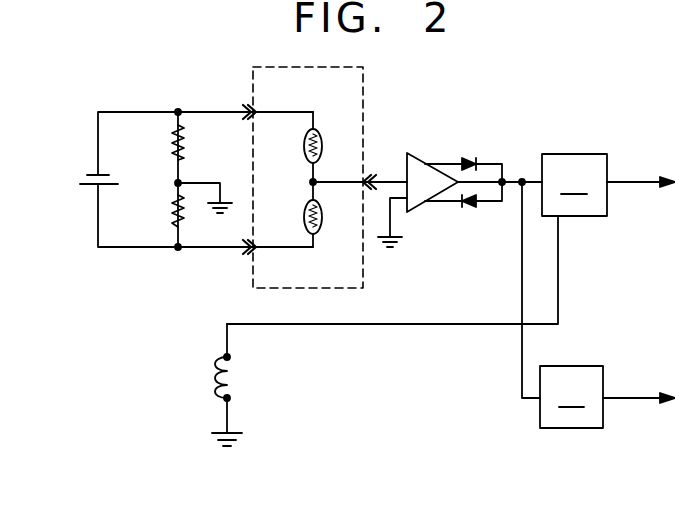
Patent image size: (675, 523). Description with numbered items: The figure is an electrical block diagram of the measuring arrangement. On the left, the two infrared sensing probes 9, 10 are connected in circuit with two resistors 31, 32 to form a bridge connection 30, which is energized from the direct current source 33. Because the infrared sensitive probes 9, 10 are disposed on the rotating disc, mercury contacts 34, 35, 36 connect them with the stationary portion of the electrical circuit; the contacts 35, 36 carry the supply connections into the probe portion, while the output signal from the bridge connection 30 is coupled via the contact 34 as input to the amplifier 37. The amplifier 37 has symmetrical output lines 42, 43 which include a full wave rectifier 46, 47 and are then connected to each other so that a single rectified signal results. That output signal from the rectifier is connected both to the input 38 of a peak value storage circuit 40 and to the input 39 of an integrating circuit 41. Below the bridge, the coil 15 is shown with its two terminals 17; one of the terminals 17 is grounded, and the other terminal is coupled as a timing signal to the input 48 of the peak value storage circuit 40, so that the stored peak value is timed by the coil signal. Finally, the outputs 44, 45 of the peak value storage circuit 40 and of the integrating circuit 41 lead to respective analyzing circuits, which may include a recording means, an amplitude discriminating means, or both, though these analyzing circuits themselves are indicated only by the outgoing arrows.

The infrared sensing probe 9 is at (322, 138).
The infrared sensing probe 10 is at (305, 218).
The coil 15 is at (232, 380).
The terminals 17 is at (225, 357).
The bridge connection 30 is at (138, 156).
The resistor 31 is at (172, 146).
The resistor 32 is at (172, 217).
The direct current source 33 is at (96, 172).
The mercury contact 34 is at (370, 178).
The mercury contact 35 is at (246, 106).
The mercury contact 36 is at (247, 257).
The amplifier 37 is at (413, 158).
The input of peak value storage circuit 38 is at (540, 178).
The input of integrating circuit 39 is at (537, 402).
The peak value storage circuit 40 is at (574, 185).
The integrating circuit 41 is at (571, 397).
The output line of amplifier 42 is at (432, 205).
The output line of amplifier 43 is at (430, 163).
The output of peak value storage circuit 44 is at (607, 178).
The output of integrating circuit 45 is at (605, 395).
The full wave rectifier element 46 is at (466, 206).
The full wave rectifier element 47 is at (472, 160).
The input of peak value storage circuit 48 is at (558, 220).